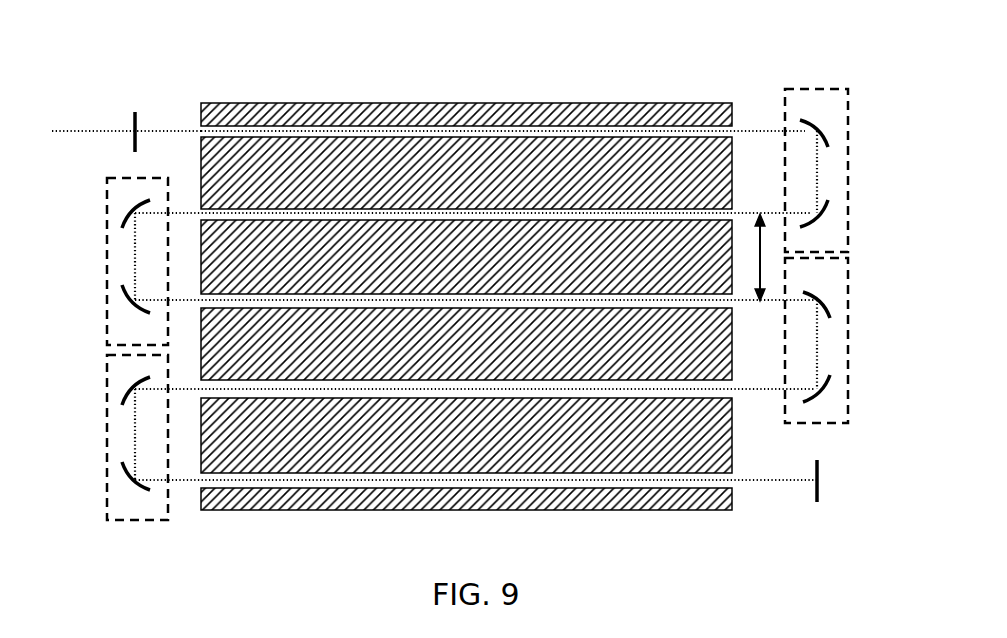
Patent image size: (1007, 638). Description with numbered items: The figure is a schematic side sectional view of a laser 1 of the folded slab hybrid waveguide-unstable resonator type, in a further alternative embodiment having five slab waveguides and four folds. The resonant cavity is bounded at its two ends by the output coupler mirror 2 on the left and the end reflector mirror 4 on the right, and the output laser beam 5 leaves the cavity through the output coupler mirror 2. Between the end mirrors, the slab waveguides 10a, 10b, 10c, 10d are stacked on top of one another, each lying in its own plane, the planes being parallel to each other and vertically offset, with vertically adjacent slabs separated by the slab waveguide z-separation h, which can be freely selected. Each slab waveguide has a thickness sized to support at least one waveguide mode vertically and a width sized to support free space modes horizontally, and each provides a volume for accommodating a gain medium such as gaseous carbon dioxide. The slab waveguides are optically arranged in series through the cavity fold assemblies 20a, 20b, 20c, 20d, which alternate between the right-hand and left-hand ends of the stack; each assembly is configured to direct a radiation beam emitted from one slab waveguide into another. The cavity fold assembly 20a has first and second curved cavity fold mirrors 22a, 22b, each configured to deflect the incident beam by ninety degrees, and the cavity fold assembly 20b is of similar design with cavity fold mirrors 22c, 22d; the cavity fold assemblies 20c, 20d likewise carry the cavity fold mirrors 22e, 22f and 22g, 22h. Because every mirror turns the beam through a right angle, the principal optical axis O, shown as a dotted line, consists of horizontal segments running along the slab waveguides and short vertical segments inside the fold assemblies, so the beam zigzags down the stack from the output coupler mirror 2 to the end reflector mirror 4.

The laser 1 is at (408, 81).
The output coupler mirror 2 is at (130, 120).
The end reflector mirror 4 is at (818, 493).
The output laser beam 5 is at (75, 131).
The slab waveguide 10a is at (280, 103).
The slab waveguide 10b is at (201, 198).
The slab waveguide 10c is at (200, 305).
The slab waveguide 10d is at (733, 482).
The cavity fold assembly 20a is at (813, 88).
The cavity fold assembly 20b is at (107, 260).
The cavity fold assembly 20c is at (847, 343).
The cavity fold assembly 20d is at (117, 522).
The cavity fold mirror 22a is at (805, 122).
The cavity fold mirror 22b is at (828, 203).
The cavity fold mirror 22c is at (133, 210).
The cavity fold mirror 22d is at (128, 297).
The cavity fold mirror 22e is at (813, 293).
The cavity fold mirror 22f is at (828, 378).
The cavity fold mirror 22g is at (133, 385).
The cavity fold mirror 22h is at (133, 473).
The principal optical axis O is at (762, 130).
The slab waveguide z-separation h is at (759, 257).